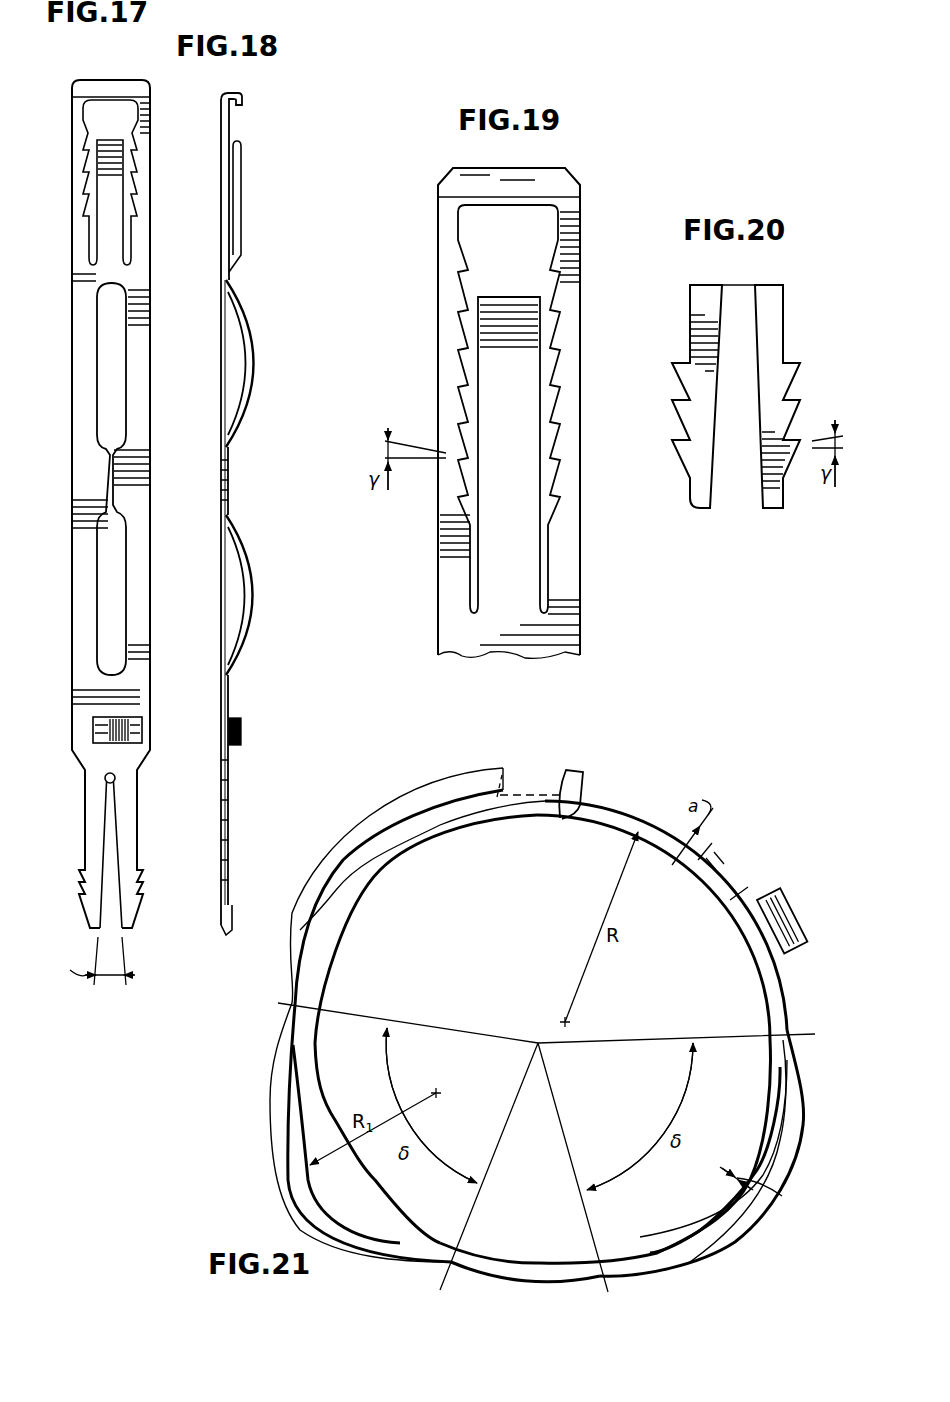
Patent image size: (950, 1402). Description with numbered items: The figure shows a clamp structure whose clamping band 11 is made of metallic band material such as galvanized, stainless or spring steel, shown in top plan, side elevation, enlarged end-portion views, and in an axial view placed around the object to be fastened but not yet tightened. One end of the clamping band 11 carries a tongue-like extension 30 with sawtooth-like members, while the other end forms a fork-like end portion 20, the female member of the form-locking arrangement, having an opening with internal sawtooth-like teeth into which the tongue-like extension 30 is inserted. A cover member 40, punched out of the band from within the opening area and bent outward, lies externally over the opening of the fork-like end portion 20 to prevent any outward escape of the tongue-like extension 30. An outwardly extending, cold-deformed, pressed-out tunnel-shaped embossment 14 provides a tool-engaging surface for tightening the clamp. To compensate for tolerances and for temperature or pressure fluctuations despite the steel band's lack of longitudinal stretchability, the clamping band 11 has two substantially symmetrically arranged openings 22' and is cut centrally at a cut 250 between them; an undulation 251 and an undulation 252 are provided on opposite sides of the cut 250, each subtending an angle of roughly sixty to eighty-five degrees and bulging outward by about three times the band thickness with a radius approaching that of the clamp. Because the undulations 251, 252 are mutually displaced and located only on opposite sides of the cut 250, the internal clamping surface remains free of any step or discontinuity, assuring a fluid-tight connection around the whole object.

In FIG. 17, the fork-like end portion 20 is at (157, 153).
In FIG. 18, the fork-like end portion 20 is at (238, 126).
In FIG. 19, the fork-like end portion 20 is at (433, 298).
In FIG. 17, the openings 22' is at (108, 479).
In FIG. 17, the undulation 251 is at (84, 358).
In FIG. 18, the undulation 251 is at (254, 383).
In FIG. 21, the undulation 251 is at (288, 1134).
In FIG. 17, the undulation 252 is at (136, 578).
In FIG. 18, the undulation 252 is at (250, 622).
In FIG. 21, the undulation 252 is at (728, 1230).
In FIG. 17, the cut 250 is at (104, 468).
In FIG. 17, the clamping band 11 is at (134, 468).
In FIG. 18, the clamping band 11 is at (231, 490).
In FIG. 17, the embossment 14 is at (94, 730).
In FIG. 18, the embossment 14 is at (243, 741).
In FIG. 17, the tongue-like extension 30 is at (136, 844).
In FIG. 18, the tongue-like extension 30 is at (233, 842).
In FIG. 20, the tongue-like extension 30 is at (686, 352).
In FIG. 18, the cover member 40 is at (242, 214).
In FIG. 19, the cover member 40 is at (504, 526).